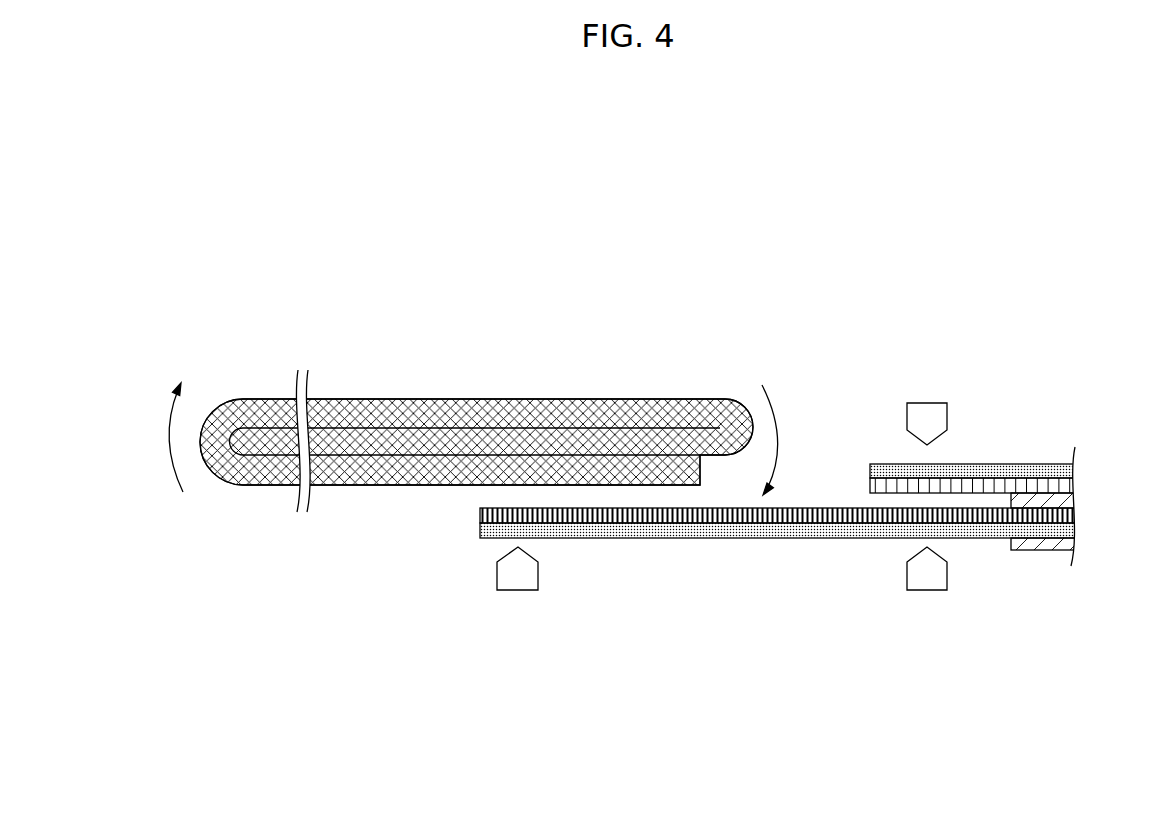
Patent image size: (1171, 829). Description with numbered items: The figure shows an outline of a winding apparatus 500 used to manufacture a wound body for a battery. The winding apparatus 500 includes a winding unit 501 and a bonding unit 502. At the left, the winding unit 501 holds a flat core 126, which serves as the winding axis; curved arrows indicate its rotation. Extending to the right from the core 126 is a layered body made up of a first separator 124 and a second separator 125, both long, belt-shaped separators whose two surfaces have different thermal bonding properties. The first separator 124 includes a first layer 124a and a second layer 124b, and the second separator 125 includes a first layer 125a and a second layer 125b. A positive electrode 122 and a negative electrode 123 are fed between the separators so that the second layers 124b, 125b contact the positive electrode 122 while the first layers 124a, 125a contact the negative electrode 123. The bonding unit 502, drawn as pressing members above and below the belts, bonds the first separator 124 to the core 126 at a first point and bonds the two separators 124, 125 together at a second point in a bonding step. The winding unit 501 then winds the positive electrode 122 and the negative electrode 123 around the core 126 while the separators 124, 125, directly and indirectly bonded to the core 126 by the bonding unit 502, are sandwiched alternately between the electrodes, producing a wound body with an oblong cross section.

The winding apparatus 500 is at (378, 682).
The winding unit 501 is at (392, 378).
The bonding unit 502 is at (928, 405).
The core 126 is at (475, 398).
The second separator 125 is at (1082, 365).
The first layer of second separator 125a is at (972, 488).
The second layer of second separator 125b is at (958, 465).
The first separator 124 is at (372, 517).
The first layer of first separator 124a is at (480, 514).
The second layer of first separator 124b is at (480, 530).
The negative electrode 123 is at (1072, 500).
The positive electrode 122 is at (1069, 540).